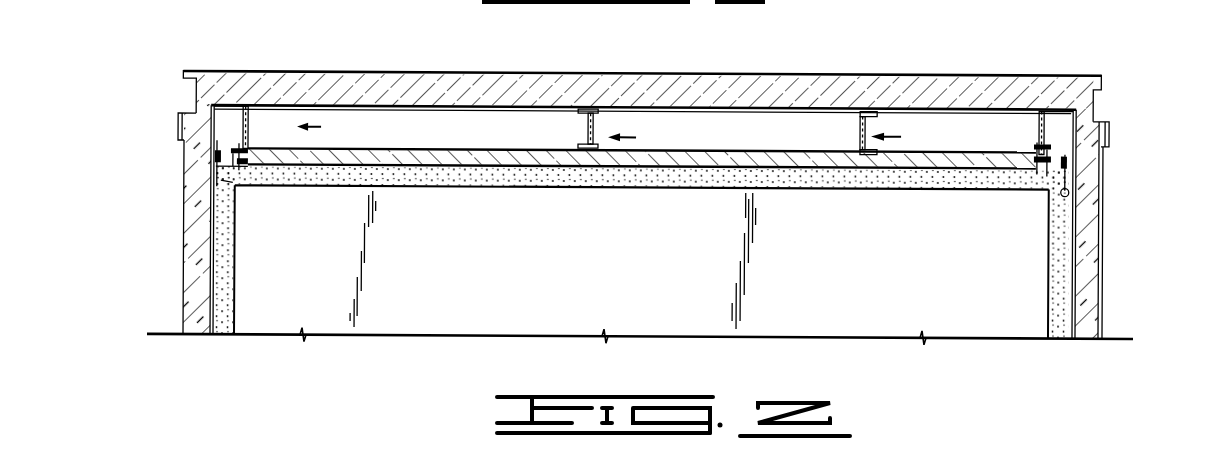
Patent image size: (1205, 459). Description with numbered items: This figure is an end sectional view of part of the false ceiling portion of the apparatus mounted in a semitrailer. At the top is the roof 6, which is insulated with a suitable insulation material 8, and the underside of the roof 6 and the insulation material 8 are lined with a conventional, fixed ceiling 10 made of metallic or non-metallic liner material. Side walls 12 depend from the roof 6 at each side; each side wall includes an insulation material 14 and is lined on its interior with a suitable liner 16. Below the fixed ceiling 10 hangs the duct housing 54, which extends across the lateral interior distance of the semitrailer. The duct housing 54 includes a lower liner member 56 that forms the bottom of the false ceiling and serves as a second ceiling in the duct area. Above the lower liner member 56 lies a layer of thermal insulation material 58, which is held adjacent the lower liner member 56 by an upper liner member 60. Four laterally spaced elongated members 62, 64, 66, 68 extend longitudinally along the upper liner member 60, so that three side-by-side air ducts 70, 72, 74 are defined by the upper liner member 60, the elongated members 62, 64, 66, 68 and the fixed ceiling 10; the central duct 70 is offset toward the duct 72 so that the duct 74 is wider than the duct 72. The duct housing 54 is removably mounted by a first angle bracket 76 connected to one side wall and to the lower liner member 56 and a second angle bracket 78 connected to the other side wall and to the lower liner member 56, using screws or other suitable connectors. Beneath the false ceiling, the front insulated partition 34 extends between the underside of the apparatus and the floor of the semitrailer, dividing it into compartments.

The roof 6 is at (586, 72).
The insulation material 8 is at (571, 72).
The fixed ceiling 10 is at (892, 97).
The side walls 12 is at (1103, 226).
The insulation material 14 is at (1083, 262).
The liner 16 is at (1063, 288).
The front insulated partition 34 is at (655, 318).
The duct housing 54 is at (781, 175).
The lower liner member 56 is at (640, 156).
The thermal insulation material 58 is at (577, 160).
The upper liner member 60 is at (640, 150).
The elongated member 62 is at (242, 118).
The elongated member 64 is at (868, 131).
The elongated member 66 is at (598, 130).
The elongated member 68 is at (1043, 117).
The central air duct 70 is at (577, 137).
The air duct 72 is at (859, 145).
The air duct 74 is at (297, 126).
The first angle bracket 76 is at (218, 184).
The second angle bracket 78 is at (1070, 202).